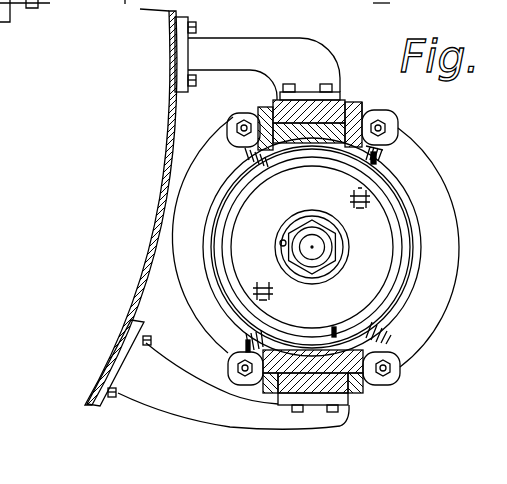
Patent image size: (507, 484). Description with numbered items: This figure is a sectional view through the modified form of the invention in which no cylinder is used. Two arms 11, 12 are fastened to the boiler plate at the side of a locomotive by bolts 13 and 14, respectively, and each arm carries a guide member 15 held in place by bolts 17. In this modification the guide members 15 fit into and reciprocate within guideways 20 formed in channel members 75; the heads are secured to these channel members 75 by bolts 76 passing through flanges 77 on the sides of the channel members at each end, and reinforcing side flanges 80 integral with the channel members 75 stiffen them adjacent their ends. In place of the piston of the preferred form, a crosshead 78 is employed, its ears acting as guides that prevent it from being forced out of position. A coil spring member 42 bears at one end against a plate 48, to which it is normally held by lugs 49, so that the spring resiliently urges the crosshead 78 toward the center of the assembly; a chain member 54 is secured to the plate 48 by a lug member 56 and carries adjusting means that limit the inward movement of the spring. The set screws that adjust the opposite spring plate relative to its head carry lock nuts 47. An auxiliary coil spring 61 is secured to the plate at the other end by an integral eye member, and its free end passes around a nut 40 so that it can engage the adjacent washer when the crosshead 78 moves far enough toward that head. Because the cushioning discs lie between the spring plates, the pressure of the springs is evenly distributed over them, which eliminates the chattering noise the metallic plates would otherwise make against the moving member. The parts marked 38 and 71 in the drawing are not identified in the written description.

The arm 11 is at (286, 50).
The arm 12 is at (176, 388).
The bolt 13 is at (197, 27).
The bolt 14 is at (150, 341).
The guide member 15 is at (348, 102).
The bolt 17 is at (330, 76).
The guideway 20 is at (363, 106).
The shaft 38 is at (318, 256).
The nut 40 is at (333, 249).
The coil spring member 42 is at (410, 190).
The lock nut 47 is at (445, 8).
The plate 48 is at (482, 8).
The lug 49 is at (258, 172).
The chain member 54 is at (356, 208).
The lug member 56 is at (259, 284).
The coil spring 61 is at (318, 212).
The anchor pin 71 is at (376, 160).
The channel member 75 is at (362, 114).
The bolt 76 is at (396, 128).
The flange 77 is at (381, 121).
The crosshead 78 is at (389, 180).
The reinforcing side flange 80 is at (378, 150).